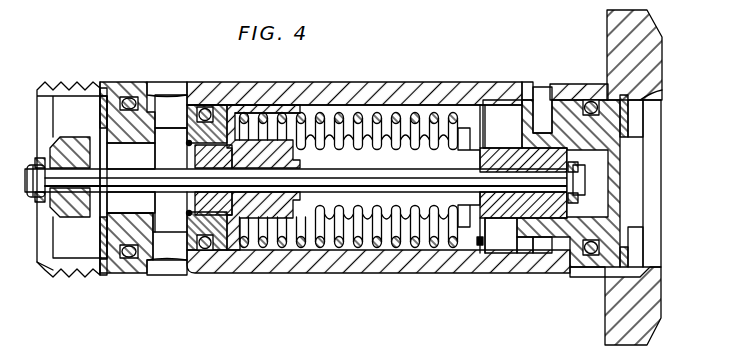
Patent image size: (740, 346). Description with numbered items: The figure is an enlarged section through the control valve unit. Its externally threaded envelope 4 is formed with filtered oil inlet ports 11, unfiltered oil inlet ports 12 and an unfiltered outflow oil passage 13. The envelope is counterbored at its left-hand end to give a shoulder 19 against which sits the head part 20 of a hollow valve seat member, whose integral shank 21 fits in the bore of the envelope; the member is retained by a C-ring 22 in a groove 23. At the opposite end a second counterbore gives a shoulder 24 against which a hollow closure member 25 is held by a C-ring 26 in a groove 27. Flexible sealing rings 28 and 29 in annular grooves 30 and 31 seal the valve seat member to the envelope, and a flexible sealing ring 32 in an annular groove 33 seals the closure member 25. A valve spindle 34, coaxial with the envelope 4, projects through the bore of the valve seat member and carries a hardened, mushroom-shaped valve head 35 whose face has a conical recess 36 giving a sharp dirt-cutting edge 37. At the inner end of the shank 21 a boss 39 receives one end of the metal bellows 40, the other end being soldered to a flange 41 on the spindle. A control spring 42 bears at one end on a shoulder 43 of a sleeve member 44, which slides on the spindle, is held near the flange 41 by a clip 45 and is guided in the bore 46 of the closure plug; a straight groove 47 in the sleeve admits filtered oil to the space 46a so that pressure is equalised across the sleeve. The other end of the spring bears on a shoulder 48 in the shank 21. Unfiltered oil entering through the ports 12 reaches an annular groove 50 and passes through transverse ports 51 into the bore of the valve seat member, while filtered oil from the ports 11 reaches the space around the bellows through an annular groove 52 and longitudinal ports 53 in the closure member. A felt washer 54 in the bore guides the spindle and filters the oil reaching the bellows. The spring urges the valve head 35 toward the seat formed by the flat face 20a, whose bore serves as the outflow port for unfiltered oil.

The envelope 4 is at (323, 97).
The filtered oil inlet ports 11 is at (544, 95).
The unfiltered oil inlet ports 12 is at (170, 92).
The unfiltered outflow oil passage 13 is at (76, 129).
The shoulder 19 is at (158, 261).
The head part of valve seat member 20 is at (110, 261).
The flat face 20a is at (112, 227).
The shank 21 is at (222, 145).
The C-ring 22 is at (100, 123).
The groove 23 is at (93, 268).
The shoulder 24 is at (482, 254).
The closure member 25 is at (570, 218).
The C-ring 26 is at (622, 97).
The groove 27 is at (610, 279).
The flexible sealing ring 28 is at (128, 97).
The flexible sealing ring 29 is at (204, 107).
The annular groove 30 is at (135, 260).
The annular groove 31 is at (212, 258).
The flexible sealing ring 32 is at (589, 256).
The annular groove 33 is at (585, 103).
The valve spindle 34 is at (133, 178).
The valve head 35 is at (52, 147).
The conical recess 36 is at (78, 217).
The dirt-cutting edge 37 is at (93, 156).
The boss 39 is at (291, 153).
The metal bellows 40 is at (377, 130).
The flange 41 is at (348, 215).
The control spring 42 is at (327, 243).
The shoulder 43 is at (484, 241).
The sleeve member 44 is at (579, 167).
The clip 45 is at (579, 197).
The bore 46 is at (552, 138).
The space 46a is at (565, 280).
The straight groove 47 is at (510, 160).
The shoulder 48 is at (236, 235).
The annular groove 50 is at (157, 235).
The transverse ports 51 is at (169, 138).
The annular groove 52 is at (520, 255).
The longitudinal ports 53 is at (527, 107).
The felt washer 54 is at (243, 150).